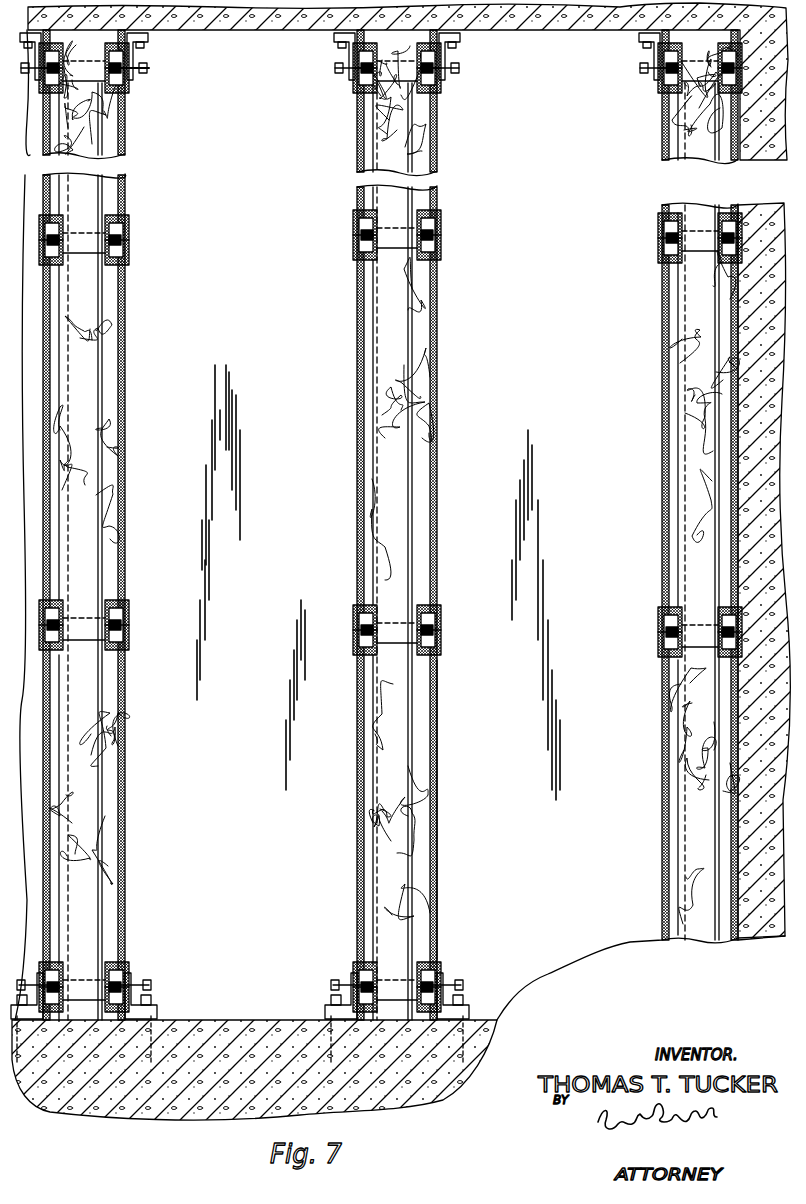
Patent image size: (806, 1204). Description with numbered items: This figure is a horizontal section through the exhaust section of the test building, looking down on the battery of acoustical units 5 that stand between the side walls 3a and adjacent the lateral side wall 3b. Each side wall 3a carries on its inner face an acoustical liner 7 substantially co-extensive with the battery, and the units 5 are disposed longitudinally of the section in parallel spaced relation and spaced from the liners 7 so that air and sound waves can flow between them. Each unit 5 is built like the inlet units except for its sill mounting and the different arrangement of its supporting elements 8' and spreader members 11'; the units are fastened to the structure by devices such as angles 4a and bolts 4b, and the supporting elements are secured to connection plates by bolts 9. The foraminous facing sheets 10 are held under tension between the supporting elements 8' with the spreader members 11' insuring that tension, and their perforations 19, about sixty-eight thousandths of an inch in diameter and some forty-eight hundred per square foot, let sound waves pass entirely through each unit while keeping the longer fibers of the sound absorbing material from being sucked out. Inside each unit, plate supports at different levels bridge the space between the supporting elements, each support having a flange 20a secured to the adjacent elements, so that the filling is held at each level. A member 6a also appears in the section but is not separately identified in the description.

The side wall 3a is at (668, 520).
The lateral side wall 3b is at (233, 30).
The angles 4a is at (145, 68).
The bolts 4b is at (135, 44).
The acoustical unit 5 is at (289, 525).
The outer frame member 6a is at (665, 722).
The acoustical liner 7 is at (690, 485).
The supporting elements 8' is at (405, 622).
The bolts 9 is at (662, 745).
The foraminous facing sheets 10 is at (43, 489).
The spreader members 11' is at (453, 810).
The perforations 19 is at (122, 305).
The flange 20a is at (120, 858).